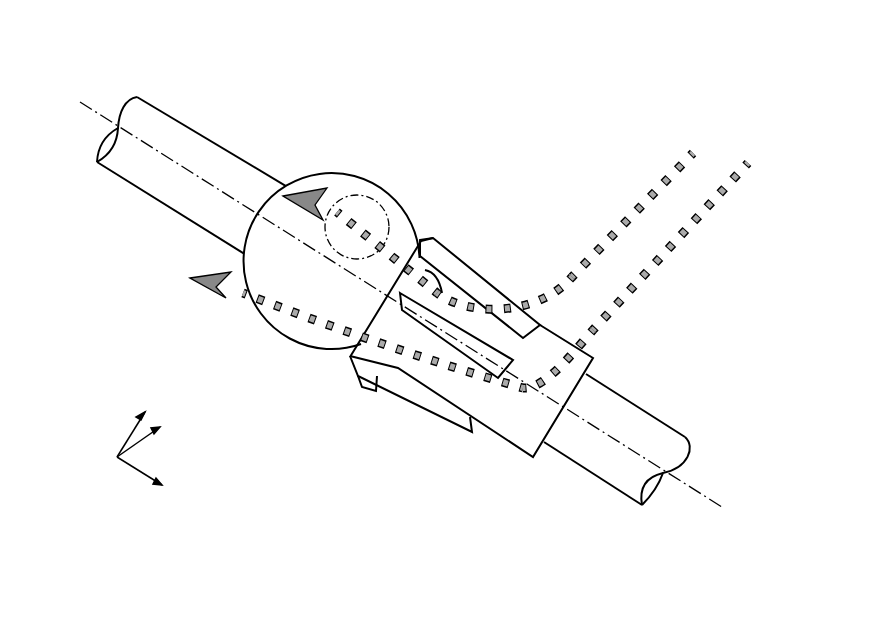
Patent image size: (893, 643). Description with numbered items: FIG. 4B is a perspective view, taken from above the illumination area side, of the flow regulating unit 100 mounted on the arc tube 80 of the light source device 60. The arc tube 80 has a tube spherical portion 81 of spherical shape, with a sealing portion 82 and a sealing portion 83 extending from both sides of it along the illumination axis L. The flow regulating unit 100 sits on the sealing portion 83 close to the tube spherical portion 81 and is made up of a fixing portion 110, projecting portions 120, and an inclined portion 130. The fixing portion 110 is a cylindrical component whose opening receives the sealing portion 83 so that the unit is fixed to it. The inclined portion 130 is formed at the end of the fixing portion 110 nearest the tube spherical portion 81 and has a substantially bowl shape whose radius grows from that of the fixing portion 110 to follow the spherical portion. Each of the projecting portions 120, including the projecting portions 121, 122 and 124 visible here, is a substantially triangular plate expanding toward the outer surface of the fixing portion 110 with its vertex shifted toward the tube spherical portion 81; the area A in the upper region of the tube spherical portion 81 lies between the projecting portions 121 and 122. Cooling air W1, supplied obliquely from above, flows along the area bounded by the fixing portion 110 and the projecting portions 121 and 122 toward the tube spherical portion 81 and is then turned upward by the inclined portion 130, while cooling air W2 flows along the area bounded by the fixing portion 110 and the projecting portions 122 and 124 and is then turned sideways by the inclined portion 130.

The wire guide apparatus 60 is at (573, 122).
The arc tube 80 is at (405, 145).
The tube spherical portion 81 is at (328, 170).
The sealing portion 82 is at (208, 135).
The sealing portion 83 is at (644, 409).
The flow regulating unit 100 is at (510, 467).
The fixing portion 110 is at (590, 347).
The projecting portions 120 is at (449, 335).
The projecting portion 121 is at (461, 258).
The projecting portion 122 is at (487, 298).
The projecting portion 124 is at (440, 422).
The inclined portion 130 is at (375, 362).
The area A is at (350, 196).
The illumination axis L is at (697, 481).
The cooling air W1 is at (496, 218).
The cooling air W2 is at (477, 258).